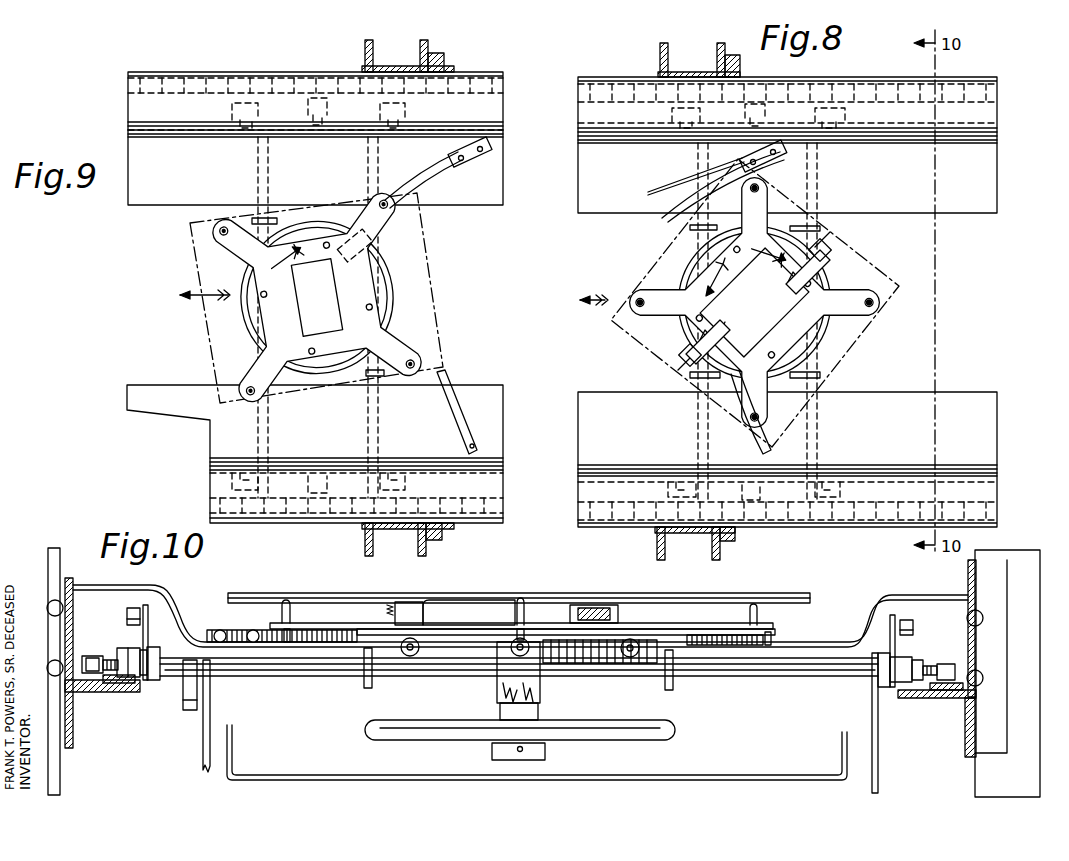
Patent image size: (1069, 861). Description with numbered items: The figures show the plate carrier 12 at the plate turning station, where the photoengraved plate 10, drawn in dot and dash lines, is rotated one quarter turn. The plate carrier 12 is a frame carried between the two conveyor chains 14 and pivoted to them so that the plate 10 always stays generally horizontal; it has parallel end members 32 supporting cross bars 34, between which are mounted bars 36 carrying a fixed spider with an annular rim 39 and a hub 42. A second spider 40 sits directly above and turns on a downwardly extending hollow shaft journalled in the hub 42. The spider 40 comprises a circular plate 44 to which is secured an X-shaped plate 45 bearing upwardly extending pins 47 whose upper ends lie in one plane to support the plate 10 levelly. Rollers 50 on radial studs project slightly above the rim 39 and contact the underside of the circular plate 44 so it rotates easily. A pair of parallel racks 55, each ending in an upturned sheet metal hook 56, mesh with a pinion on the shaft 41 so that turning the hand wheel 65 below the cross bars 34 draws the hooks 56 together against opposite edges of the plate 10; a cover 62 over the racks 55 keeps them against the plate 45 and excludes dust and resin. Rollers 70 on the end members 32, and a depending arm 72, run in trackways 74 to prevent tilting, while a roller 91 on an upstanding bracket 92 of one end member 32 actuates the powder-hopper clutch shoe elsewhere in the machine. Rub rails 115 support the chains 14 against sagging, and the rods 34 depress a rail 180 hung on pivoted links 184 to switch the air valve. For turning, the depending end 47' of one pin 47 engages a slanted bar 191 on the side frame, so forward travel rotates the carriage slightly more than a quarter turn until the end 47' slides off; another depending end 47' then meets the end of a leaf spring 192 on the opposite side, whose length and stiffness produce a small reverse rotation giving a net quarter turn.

In FIG. 9, the photoengraved plate 10 is at (200, 372).
In FIG. 8, the photoengraved plate 10 is at (870, 366).
In FIG. 10, the photoengraved plate 10 is at (720, 605).
In FIG. 9, the plate carrier 12 is at (403, 287).
In FIG. 8, the plate carrier 12 is at (836, 317).
In FIG. 9, the conveyor chain 14 is at (272, 76).
In FIG. 8, the conveyor chain 14 is at (850, 80).
In FIG. 10, the conveyor chain 14 is at (110, 658).
In FIG. 9, the end members 32 is at (292, 132).
In FIG. 8, the end members 32 is at (825, 482).
In FIG. 10, the end members 32 is at (155, 682).
In FIG. 9, the cross bars 34 is at (368, 166).
In FIG. 8, the cross bars 34 is at (820, 421).
In FIG. 10, the cross bars 34 is at (310, 676).
In FIG. 9, the bars 36 is at (280, 219).
In FIG. 8, the bars 36 is at (820, 376).
In FIG. 10, the bars 36 is at (372, 685).
In FIG. 10, the annular rim 39 is at (572, 664).
In FIG. 9, the second spider 40 is at (229, 247).
In FIG. 8, the second spider 40 is at (670, 306).
In FIG. 10, the second spider 40 is at (344, 625).
In FIG. 10, the shaft 41 is at (505, 758).
In FIG. 10, the hub 42 is at (497, 690).
In FIG. 9, the circular plate 44 is at (240, 312).
In FIG. 8, the circular plate 44 is at (688, 262).
In FIG. 10, the circular plate 44 is at (368, 628).
In FIG. 9, the X-shaped plate 45 is at (262, 327).
In FIG. 8, the X-shaped plate 45 is at (690, 320).
In FIG. 10, the X-shaped plate 45 is at (408, 624).
In FIG. 9, the pins 47 is at (375, 287).
In FIG. 8, the pins 47 is at (754, 271).
In FIG. 10, the pins 47 is at (539, 607).
In FIG. 10, the depending end 47' is at (530, 670).
In FIG. 10, the rollers 50 is at (508, 648).
In FIG. 8, the racks 55 is at (830, 270).
In FIG. 10, the racks 55 is at (612, 605).
In FIG. 8, the sheet metal hook 56 is at (836, 246).
In FIG. 9, the cover 62 is at (335, 300).
In FIG. 8, the cover 62 is at (764, 310).
In FIG. 10, the cover 62 is at (462, 608).
In FIG. 10, the hand wheel 65 is at (628, 740).
In FIG. 9, the rollers 70 is at (235, 110).
In FIG. 8, the rollers 70 is at (668, 488).
In FIG. 10, the rollers 70 is at (143, 682).
In FIG. 10, the depending arm 72 is at (878, 771).
In FIG. 10, the trackways 74 is at (128, 680).
In FIG. 10, the roller 91 is at (127, 617).
In FIG. 10, the bracket 92 is at (140, 633).
In FIG. 10, the rub rails 115 is at (118, 690).
In FIG. 10, the rail 180 is at (190, 712).
In FIG. 10, the pivoted links 184 is at (203, 762).
In FIG. 9, the slanted bar 191 is at (460, 414).
In FIG. 8, the slanted bar 191 is at (740, 405).
In FIG. 10, the slanted bar 191 is at (348, 642).
In FIG. 9, the leaf spring 192 is at (430, 172).
In FIG. 8, the leaf spring 192 is at (660, 202).
In FIG. 10, the leaf spring 192 is at (728, 600).